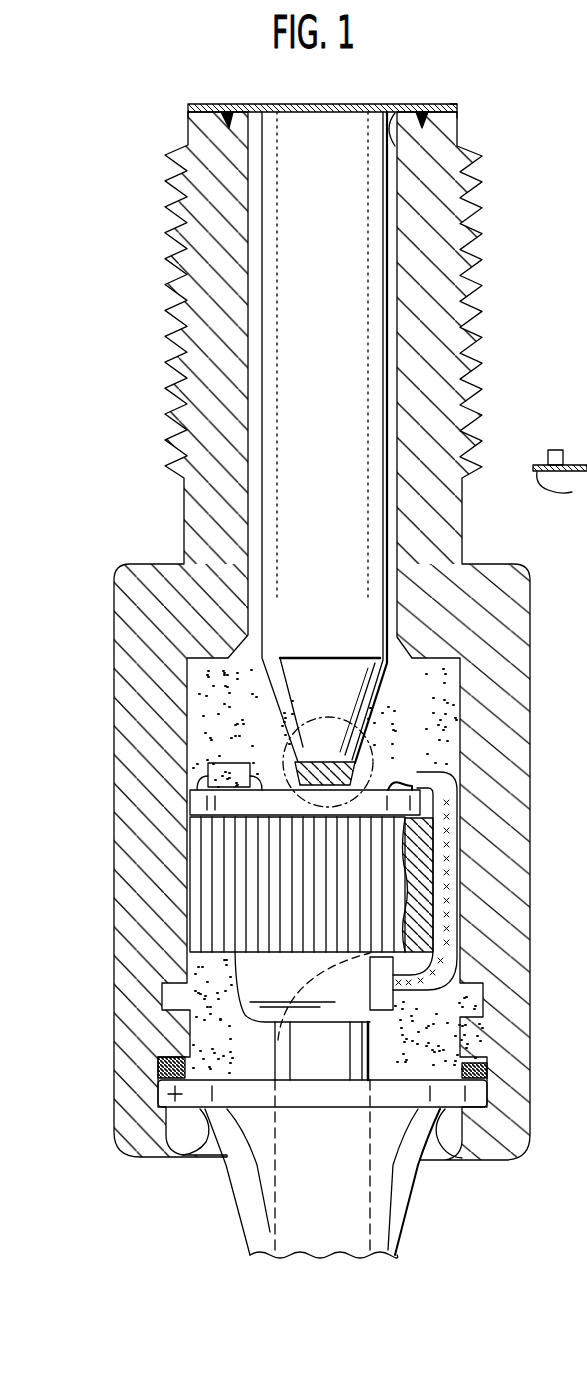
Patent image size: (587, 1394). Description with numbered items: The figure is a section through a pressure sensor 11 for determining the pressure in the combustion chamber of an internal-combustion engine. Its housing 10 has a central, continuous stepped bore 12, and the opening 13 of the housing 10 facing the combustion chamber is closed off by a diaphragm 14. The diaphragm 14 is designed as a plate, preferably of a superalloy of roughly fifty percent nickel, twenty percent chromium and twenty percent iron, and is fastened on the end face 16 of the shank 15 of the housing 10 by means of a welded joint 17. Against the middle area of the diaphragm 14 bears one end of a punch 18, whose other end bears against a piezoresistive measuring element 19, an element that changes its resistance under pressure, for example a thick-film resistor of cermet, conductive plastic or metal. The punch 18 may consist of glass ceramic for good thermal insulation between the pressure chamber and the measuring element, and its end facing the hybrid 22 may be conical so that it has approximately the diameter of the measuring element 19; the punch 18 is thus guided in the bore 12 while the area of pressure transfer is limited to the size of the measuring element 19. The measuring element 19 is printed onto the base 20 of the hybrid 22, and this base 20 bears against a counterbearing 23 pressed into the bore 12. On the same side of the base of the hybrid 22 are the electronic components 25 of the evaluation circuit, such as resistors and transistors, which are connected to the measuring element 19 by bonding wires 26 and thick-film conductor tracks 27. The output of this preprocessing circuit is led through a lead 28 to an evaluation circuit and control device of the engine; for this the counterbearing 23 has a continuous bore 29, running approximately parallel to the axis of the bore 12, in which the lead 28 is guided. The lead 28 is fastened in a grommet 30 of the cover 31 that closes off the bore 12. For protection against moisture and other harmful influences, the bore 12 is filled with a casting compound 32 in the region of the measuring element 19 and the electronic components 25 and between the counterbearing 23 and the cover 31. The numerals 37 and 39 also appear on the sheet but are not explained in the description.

The housing 10 is at (135, 607).
The pressure sensor 11 is at (128, 395).
The stepped bore 12 is at (256, 268).
The opening 13 is at (397, 143).
The diaphragm 14 is at (320, 106).
The shank 15 is at (198, 127).
The end face 16 is at (457, 111).
The welded joint 17 is at (455, 105).
The punch 18 is at (330, 249).
The piezoresistive measuring element 19 is at (377, 757).
The base of the hybrid 20 is at (325, 762).
The hybrid 22 is at (195, 807).
The counterbearing 23 is at (210, 857).
The electronic components 25 is at (228, 763).
The bonding wires 26 is at (197, 776).
The thick-film conductor tracks 27 is at (383, 790).
The lead 28 is at (458, 907).
The continuous bore 29 is at (413, 868).
The grommet 30 is at (255, 1198).
The cover 31 is at (158, 1092).
The casting compound 32 is at (428, 1037).
The plate 37 is at (562, 472).
The block 39 is at (563, 458).